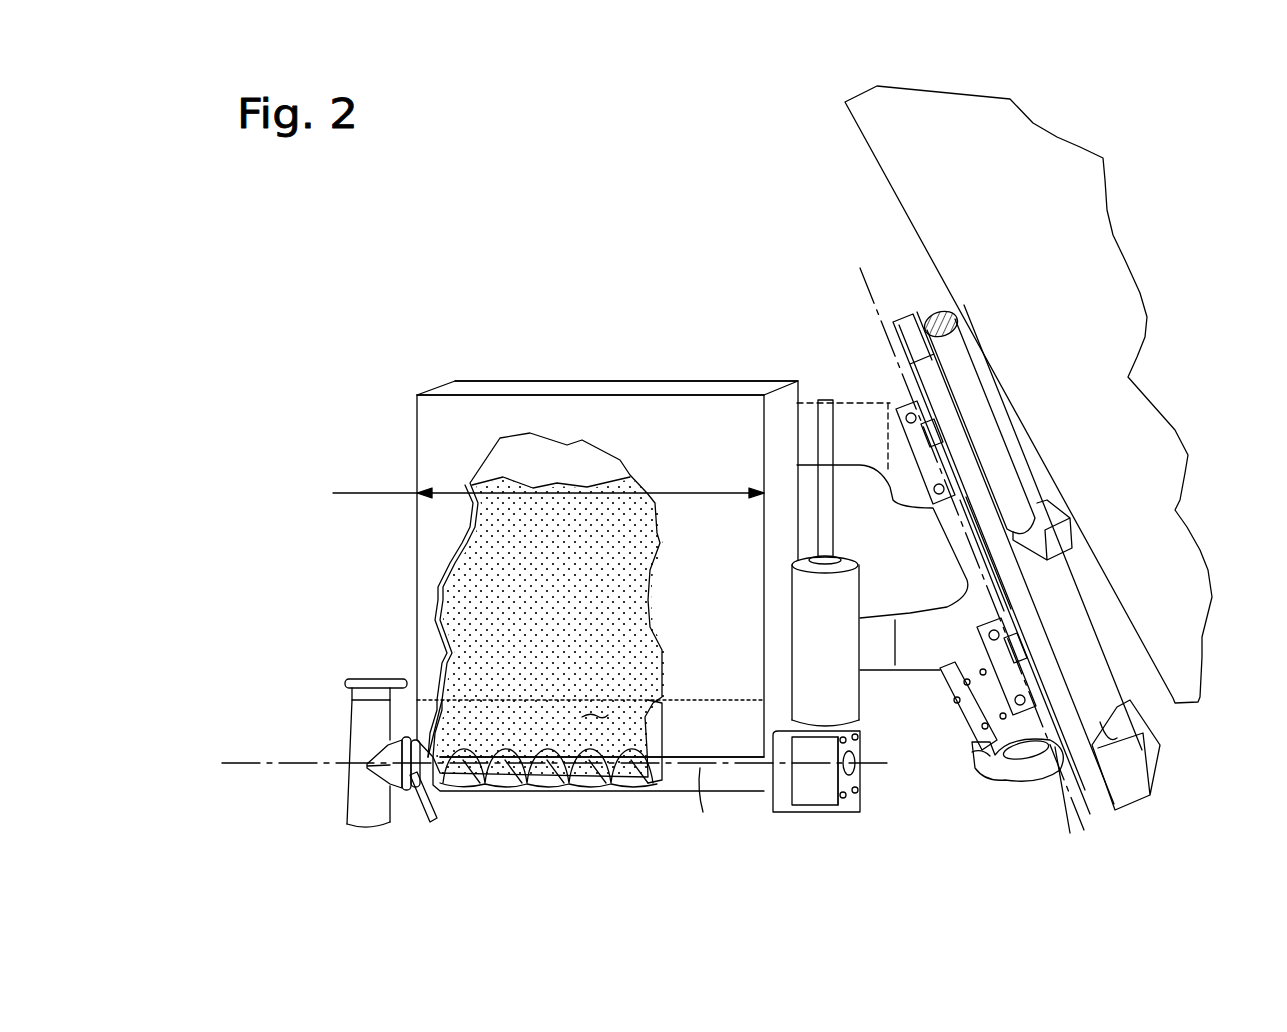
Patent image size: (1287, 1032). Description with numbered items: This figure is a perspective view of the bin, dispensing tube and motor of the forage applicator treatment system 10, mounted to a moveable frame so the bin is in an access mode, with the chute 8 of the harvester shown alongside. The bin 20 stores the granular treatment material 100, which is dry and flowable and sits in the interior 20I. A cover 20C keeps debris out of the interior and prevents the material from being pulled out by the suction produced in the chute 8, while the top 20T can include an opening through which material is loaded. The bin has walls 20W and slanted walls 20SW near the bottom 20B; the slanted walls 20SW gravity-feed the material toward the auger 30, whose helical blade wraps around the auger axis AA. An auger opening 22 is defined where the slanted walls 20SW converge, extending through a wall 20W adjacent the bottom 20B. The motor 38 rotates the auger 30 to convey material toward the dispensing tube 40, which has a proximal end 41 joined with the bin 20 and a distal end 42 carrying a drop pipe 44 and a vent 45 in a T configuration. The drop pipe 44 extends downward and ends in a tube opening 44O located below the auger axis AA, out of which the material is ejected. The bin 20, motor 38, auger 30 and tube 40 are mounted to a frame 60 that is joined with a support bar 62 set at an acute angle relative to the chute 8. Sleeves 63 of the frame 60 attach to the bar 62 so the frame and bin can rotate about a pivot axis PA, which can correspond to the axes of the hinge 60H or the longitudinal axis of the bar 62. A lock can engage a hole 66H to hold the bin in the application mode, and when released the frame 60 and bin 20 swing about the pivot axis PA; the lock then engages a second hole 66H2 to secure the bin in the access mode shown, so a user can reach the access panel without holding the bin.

The system 10 is at (767, 135).
The chute 8 is at (1092, 282).
The pivot axis PA is at (868, 268).
The support bar 62 is at (1093, 690).
The sleeve 63 is at (1140, 750).
The hinge 60H is at (937, 435).
The frame 60 is at (923, 655).
The hole 66H is at (1052, 772).
The second hole 66H2 is at (977, 752).
The motor 38 is at (840, 617).
The slanted walls 20SW is at (635, 727).
The bin 20 is at (363, 440).
The top 20T is at (433, 388).
The cover 20C is at (482, 380).
The walls 20W is at (526, 493).
The bottom 20B is at (596, 722).
The treatment material 100 is at (505, 598).
The interior 20I is at (580, 480).
The auger 30 is at (518, 783).
The drop pipe 44 is at (345, 815).
The tube opening 44O is at (363, 830).
The vent 45 is at (352, 695).
The distal end 42 is at (370, 765).
The proximal end 41 is at (402, 783).
The dispensing tube 40 is at (393, 780).
The hopper outlet 22 is at (440, 708).
The auger axis AA is at (250, 762).